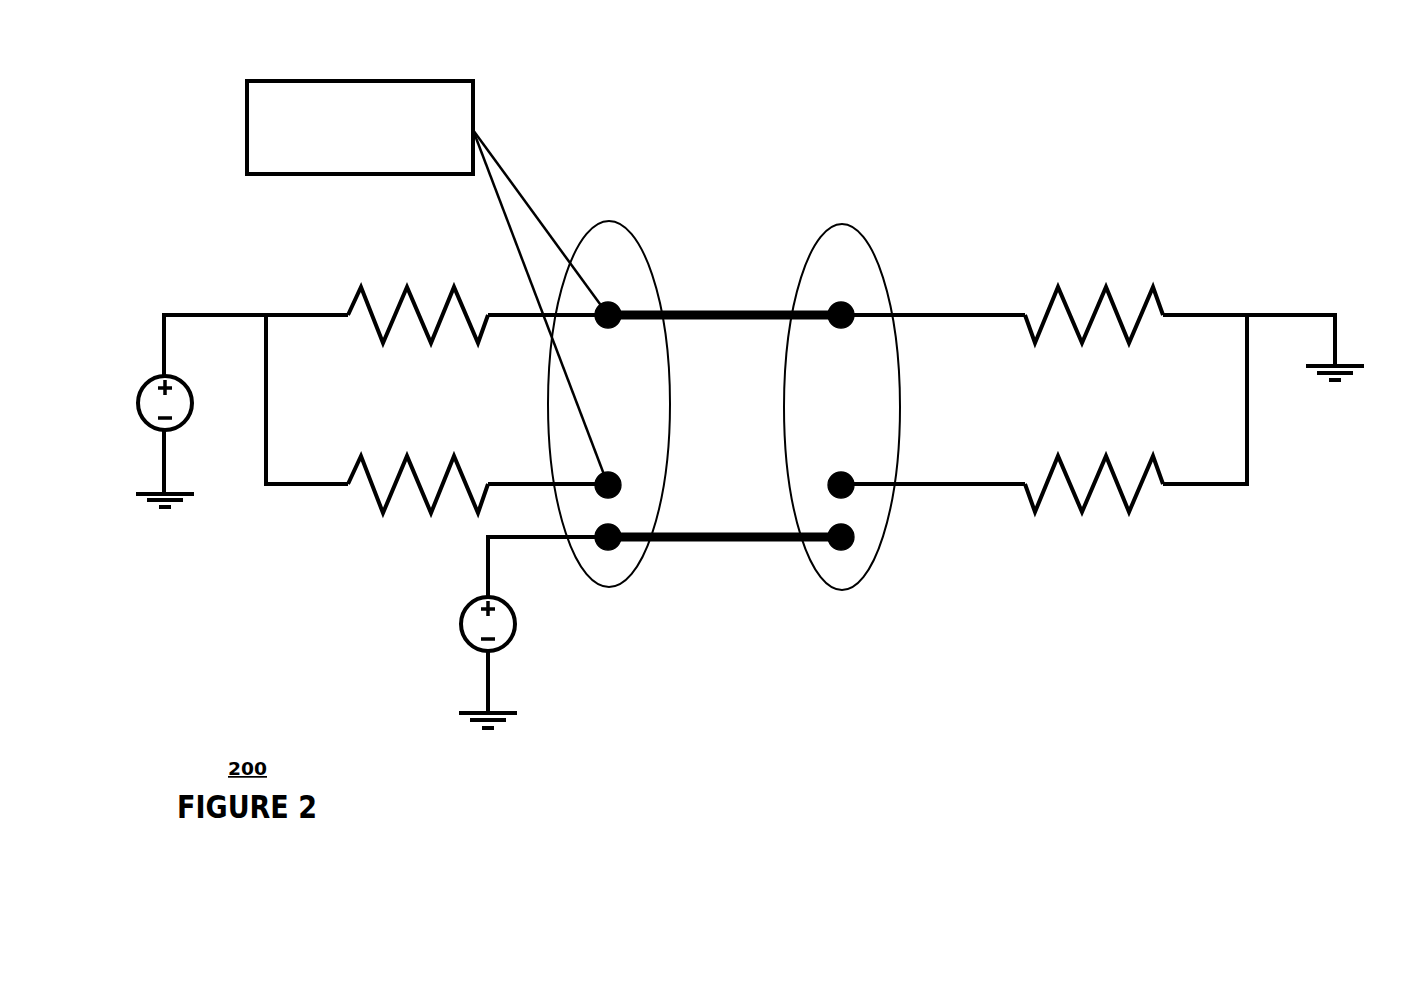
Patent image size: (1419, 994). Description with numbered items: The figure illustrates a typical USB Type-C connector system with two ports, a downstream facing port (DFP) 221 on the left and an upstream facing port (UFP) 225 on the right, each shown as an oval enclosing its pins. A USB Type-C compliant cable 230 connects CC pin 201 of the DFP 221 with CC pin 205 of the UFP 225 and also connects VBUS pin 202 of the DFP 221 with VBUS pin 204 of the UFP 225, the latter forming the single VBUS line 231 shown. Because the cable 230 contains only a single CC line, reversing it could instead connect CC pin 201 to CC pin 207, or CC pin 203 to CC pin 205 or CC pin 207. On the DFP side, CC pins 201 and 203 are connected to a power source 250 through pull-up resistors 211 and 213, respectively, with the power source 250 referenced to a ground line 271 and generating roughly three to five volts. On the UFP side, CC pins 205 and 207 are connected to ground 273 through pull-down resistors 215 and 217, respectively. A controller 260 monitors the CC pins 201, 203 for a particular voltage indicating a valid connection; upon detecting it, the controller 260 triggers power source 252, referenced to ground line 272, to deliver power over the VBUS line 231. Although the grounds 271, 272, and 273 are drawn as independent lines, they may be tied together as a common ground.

The CC pin 201 is at (598, 305).
The VBUS pin 202 is at (614, 550).
The CC pin 203 is at (598, 478).
The VBUS pin 204 is at (835, 550).
The CC pin 205 is at (850, 305).
The CC pin 207 is at (855, 478).
The pull-up resistor 211 is at (350, 290).
The pull-up resistor 213 is at (375, 515).
The pull-down resistor 215 is at (1157, 290).
The pull-down resistor 217 is at (1132, 515).
The downstream facing port (DFP) 221 is at (609, 221).
The upstream facing port (UFP) 225 is at (860, 230).
The USB Type-C compliant cable 230 is at (726, 530).
The VBUS line 231 is at (486, 583).
The power source 250 is at (143, 403).
The power source 252 is at (467, 655).
The controller 260 is at (247, 82).
The ground line 271 is at (160, 510).
The ground line 272 is at (518, 713).
The ground 273 is at (1337, 382).